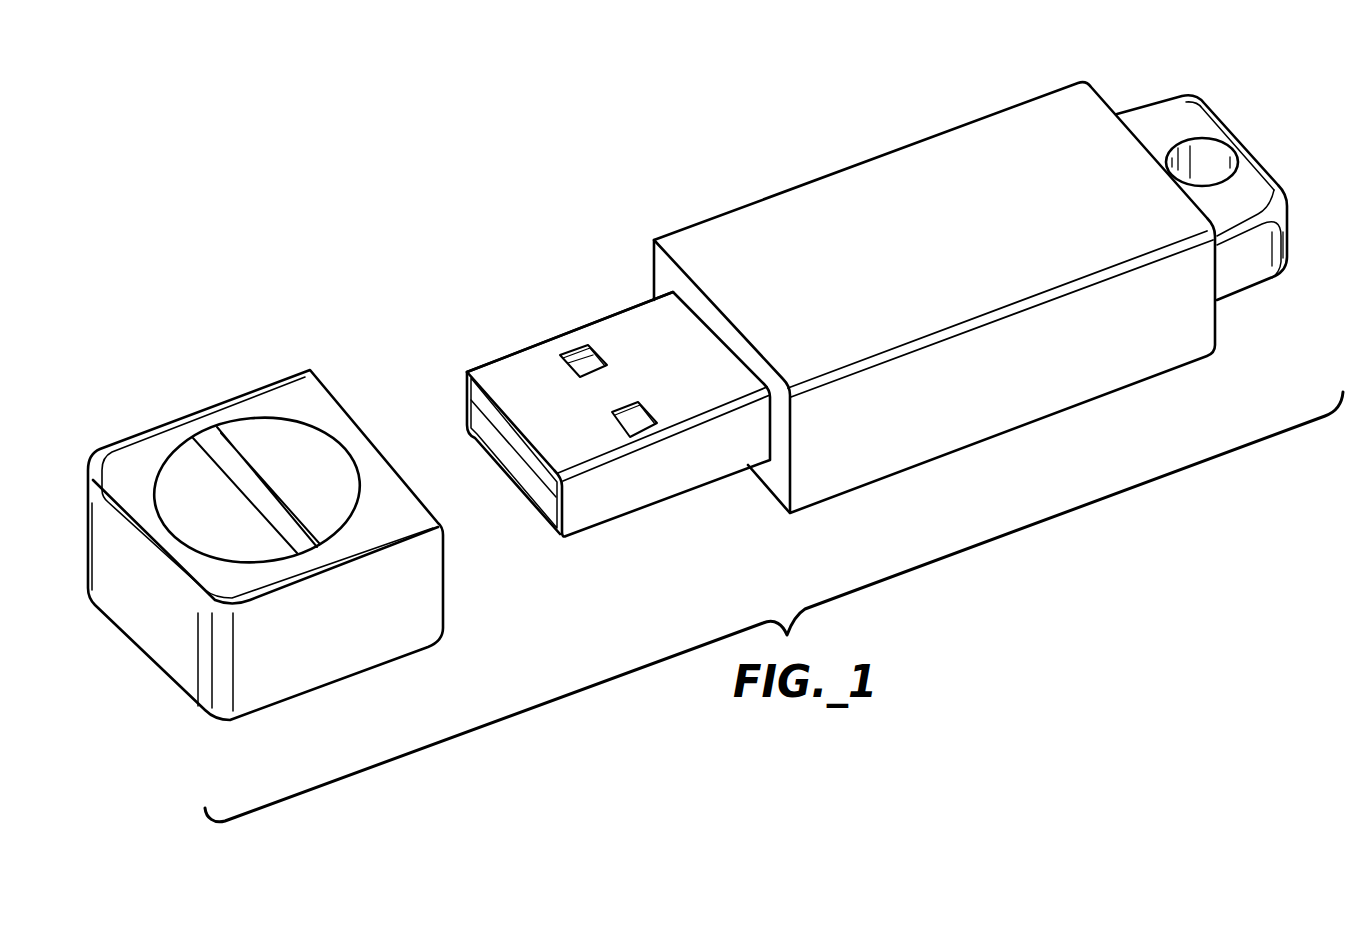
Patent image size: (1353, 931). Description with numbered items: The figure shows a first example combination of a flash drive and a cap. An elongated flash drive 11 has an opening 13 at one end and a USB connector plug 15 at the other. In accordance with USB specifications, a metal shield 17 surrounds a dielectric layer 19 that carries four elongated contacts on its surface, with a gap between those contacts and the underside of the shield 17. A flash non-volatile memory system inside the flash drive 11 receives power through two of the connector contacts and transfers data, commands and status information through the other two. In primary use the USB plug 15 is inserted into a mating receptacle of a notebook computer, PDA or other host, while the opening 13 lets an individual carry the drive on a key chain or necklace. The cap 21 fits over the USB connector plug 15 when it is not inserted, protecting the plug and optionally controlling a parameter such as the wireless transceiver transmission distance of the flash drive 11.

The flash drive 11 is at (870, 134).
The opening 13 is at (1182, 148).
The USB connector plug 15 is at (573, 321).
The metal shield 17 is at (520, 354).
The dielectric layer 19 is at (472, 418).
The cap 21 is at (177, 408).